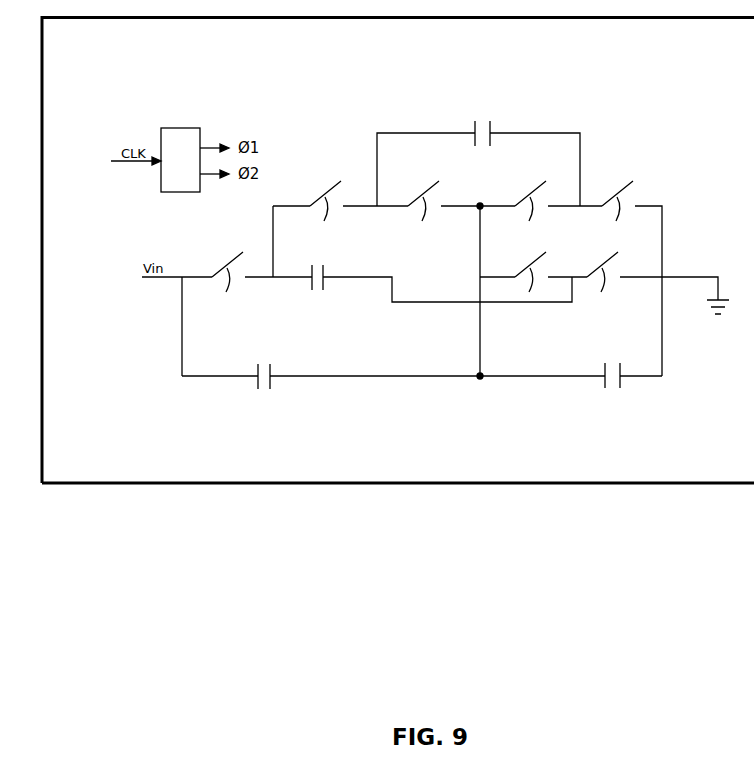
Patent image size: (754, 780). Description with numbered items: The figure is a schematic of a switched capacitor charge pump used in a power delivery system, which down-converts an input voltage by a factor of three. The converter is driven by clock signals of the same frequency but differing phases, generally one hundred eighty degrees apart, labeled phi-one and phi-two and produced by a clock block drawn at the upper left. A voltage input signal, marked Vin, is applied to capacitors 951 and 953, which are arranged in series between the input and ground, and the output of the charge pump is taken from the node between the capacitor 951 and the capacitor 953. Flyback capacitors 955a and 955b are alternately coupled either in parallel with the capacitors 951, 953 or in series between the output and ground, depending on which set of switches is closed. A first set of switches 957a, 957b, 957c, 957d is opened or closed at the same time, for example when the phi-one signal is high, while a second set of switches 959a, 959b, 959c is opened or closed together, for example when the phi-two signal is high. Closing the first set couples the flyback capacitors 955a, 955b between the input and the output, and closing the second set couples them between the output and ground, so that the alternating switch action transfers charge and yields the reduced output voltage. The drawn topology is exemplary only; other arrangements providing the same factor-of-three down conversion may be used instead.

The capacitor 951 is at (257, 382).
The capacitor 953 is at (622, 378).
The flyback capacitor 955a is at (493, 128).
The flyback capacitor 955b is at (327, 270).
The first set switch 957a is at (225, 282).
The first set switch 957b is at (529, 278).
The first set switch 957c is at (424, 211).
The first set switch 957d is at (612, 211).
The second set switch 959a is at (323, 211).
The second set switch 959b is at (525, 210).
The second set switch 959c is at (598, 283).